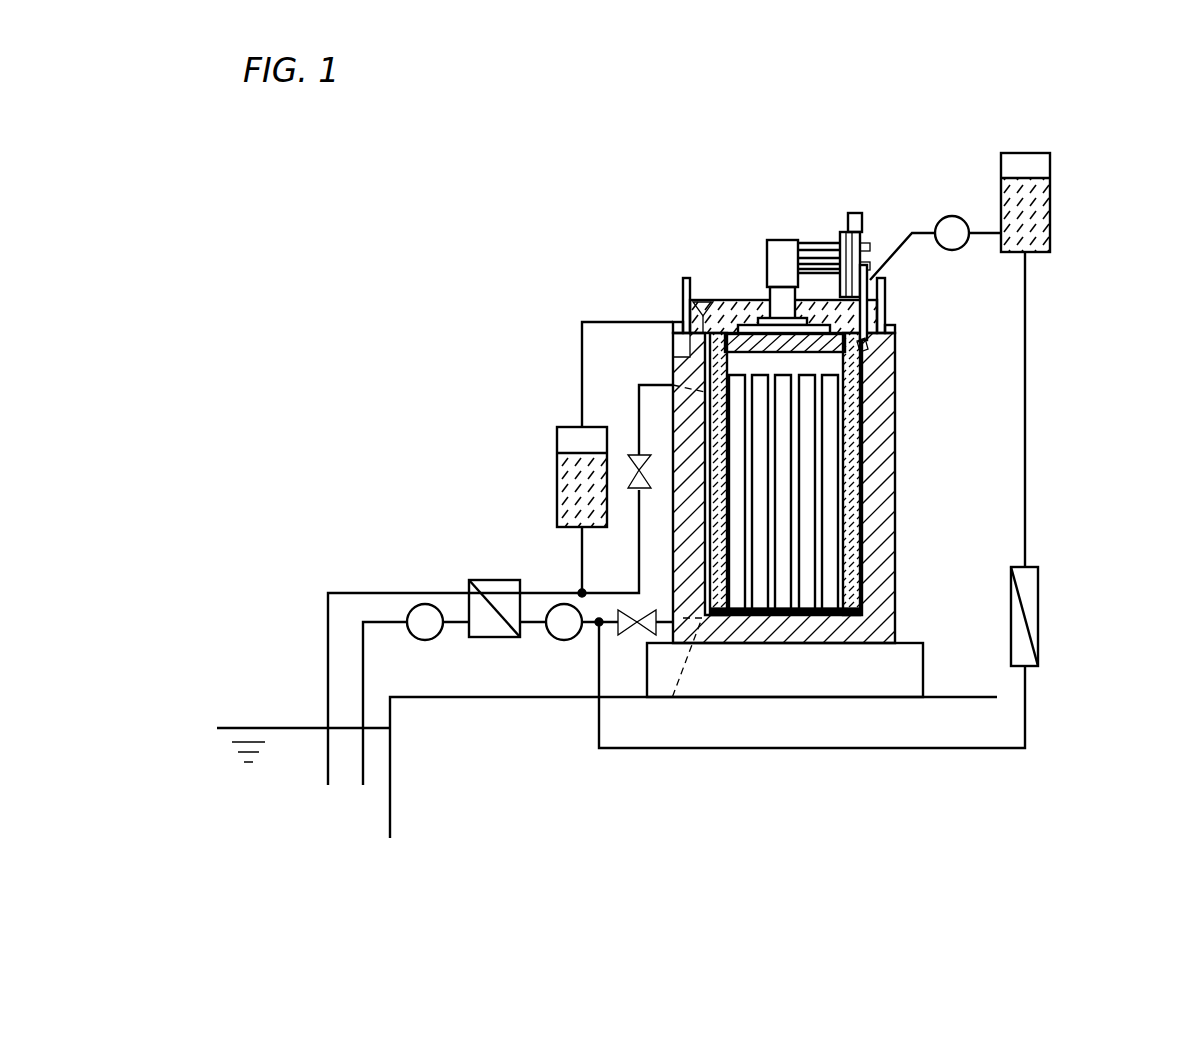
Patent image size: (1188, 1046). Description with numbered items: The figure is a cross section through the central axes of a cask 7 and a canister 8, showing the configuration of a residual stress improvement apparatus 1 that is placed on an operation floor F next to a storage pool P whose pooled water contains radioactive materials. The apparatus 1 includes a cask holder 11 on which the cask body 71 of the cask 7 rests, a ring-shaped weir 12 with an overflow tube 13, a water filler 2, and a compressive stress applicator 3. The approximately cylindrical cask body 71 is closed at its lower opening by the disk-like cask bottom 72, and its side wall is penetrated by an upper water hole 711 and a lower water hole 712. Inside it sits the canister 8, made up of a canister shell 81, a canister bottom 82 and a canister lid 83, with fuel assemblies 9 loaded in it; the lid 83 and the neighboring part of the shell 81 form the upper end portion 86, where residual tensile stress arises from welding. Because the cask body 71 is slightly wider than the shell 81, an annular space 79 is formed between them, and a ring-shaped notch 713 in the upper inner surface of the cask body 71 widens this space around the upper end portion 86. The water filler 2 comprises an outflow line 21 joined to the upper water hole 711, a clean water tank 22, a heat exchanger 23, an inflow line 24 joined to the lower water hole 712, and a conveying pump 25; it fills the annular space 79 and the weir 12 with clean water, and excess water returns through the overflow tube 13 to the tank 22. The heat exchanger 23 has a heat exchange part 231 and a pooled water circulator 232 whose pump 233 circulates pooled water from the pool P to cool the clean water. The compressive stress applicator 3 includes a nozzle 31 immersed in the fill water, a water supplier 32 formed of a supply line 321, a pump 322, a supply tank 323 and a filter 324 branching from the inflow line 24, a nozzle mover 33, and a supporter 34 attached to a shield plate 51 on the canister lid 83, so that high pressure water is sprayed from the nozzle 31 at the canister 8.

The residual stress improvement apparatus 1 is at (592, 233).
The water filler 2 is at (676, 587).
The compressive stress applicator 3 is at (812, 223).
The cask 7 is at (775, 522).
The canister 8 is at (853, 519).
The fuel assemblies 9 is at (760, 596).
The cask holder 11 is at (850, 684).
The ring-shaped weir 12 is at (683, 302).
The overflow tube 13 is at (613, 322).
The outflow line 21 is at (550, 592).
The clean water tank 22 is at (557, 445).
The heat exchanger 23 is at (676, 619).
The inflow line 24 is at (533, 626).
The conveying pump 25 is at (566, 641).
The nozzle 31 is at (872, 347).
The water supplier 32 is at (1010, 408).
The nozzle mover 33 is at (817, 238).
The supporter 34 is at (783, 300).
The shield plate 51 is at (740, 333).
The cask body 71 is at (878, 551).
The cask bottom 72 is at (832, 632).
The annular space 79 is at (858, 477).
The canister shell 81 is at (853, 423).
The canister bottom 82 is at (812, 612).
The canister lid 83 is at (862, 355).
The upper end portion 86 is at (686, 300).
The heat exchange part 231 is at (495, 578).
The pooled water circulator 232 is at (425, 588).
The pump 233 is at (428, 641).
The supply line 321 is at (1027, 395).
The pump 322 is at (952, 215).
The supply tank 323 is at (1050, 198).
The filter 324 is at (1040, 615).
The upper water hole 711 is at (705, 392).
The lower water hole 712 is at (674, 680).
The ring-shaped notch 713 is at (700, 333).
The operation floor F is at (943, 693).
The storage pool P is at (293, 770).